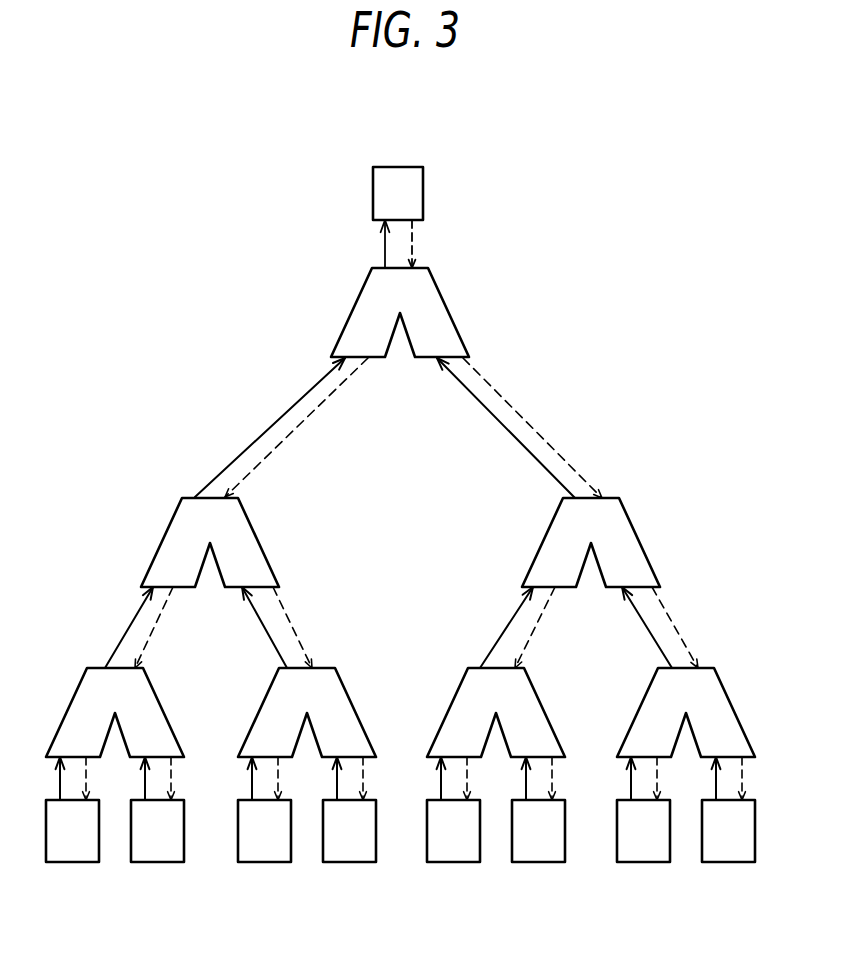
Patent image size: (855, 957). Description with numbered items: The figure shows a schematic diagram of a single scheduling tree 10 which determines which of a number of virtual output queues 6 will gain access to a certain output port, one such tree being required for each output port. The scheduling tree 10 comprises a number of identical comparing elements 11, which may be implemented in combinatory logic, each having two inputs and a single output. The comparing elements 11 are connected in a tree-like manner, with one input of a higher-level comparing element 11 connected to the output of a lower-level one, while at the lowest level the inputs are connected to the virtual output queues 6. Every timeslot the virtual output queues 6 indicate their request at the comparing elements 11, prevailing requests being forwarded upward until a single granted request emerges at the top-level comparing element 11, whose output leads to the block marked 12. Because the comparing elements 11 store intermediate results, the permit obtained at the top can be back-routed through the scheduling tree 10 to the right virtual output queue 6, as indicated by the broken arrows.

The scheduling tree 10 is at (558, 398).
The comparing element 11 is at (438, 292).
The root unit E0 12 is at (399, 167).
The virtual output queue 6 is at (75, 862).